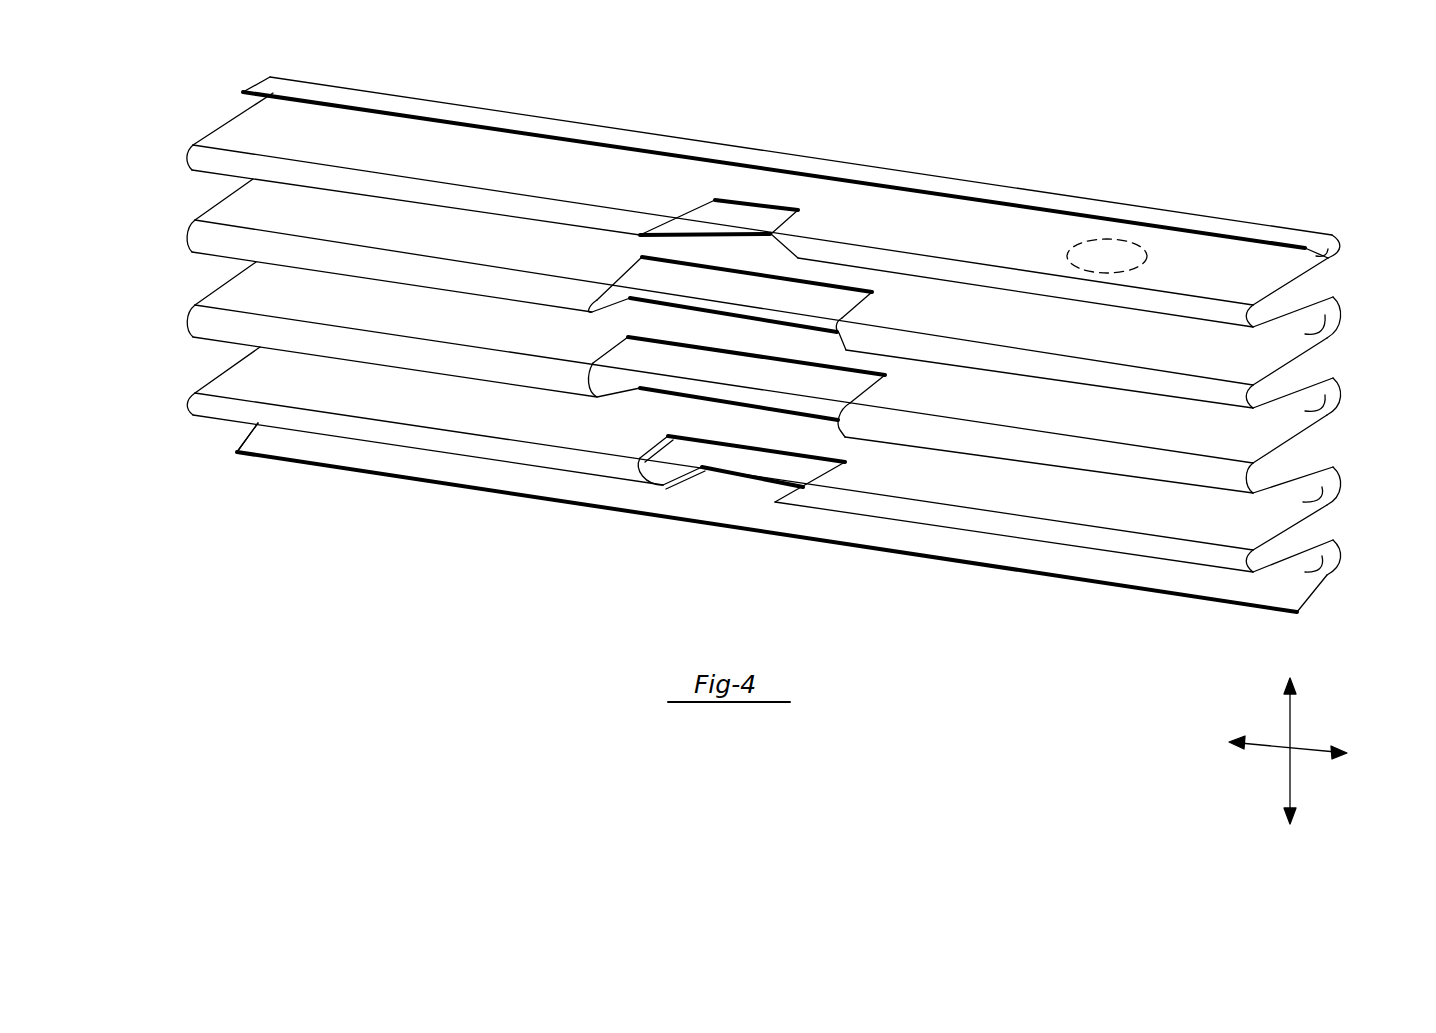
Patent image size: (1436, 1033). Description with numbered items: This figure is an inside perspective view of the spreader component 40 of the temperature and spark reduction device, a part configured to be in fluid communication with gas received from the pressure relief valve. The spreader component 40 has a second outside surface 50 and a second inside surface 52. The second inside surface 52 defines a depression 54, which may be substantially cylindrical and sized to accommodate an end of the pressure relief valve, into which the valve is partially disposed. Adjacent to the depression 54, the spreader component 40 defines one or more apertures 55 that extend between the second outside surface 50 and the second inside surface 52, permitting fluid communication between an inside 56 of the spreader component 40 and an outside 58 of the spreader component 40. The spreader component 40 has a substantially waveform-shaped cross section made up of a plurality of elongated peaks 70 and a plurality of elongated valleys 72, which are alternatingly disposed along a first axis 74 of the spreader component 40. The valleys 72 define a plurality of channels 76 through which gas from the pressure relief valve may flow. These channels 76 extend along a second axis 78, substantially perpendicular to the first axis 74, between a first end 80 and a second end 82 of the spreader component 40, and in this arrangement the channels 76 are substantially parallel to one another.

The spreader component 40 is at (1216, 103).
The second outside surface 50 is at (1333, 236).
The second inside surface 52 is at (985, 238).
The depression 54 is at (775, 457).
The apertures 55 is at (712, 212).
The inside 56 is at (1131, 604).
The outside 58 is at (1333, 466).
The elongated peaks 70 is at (203, 160).
The elongated valleys 72 is at (1320, 258).
The first axis 74 is at (1293, 705).
The channels 76 is at (285, 108).
The second axis 78 is at (1310, 758).
The first end 80 is at (1312, 612).
The second end 82 is at (240, 452).